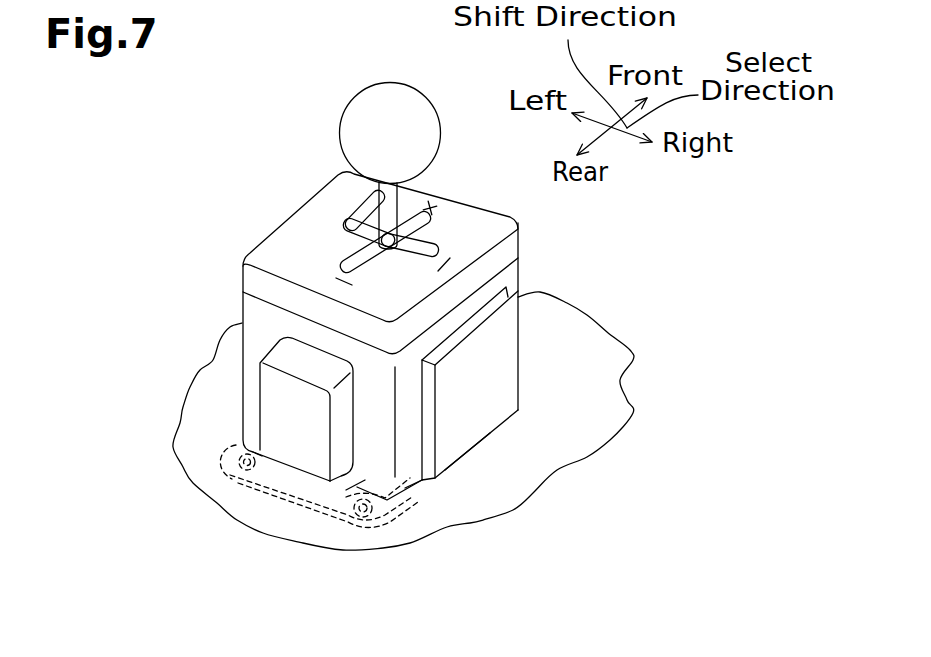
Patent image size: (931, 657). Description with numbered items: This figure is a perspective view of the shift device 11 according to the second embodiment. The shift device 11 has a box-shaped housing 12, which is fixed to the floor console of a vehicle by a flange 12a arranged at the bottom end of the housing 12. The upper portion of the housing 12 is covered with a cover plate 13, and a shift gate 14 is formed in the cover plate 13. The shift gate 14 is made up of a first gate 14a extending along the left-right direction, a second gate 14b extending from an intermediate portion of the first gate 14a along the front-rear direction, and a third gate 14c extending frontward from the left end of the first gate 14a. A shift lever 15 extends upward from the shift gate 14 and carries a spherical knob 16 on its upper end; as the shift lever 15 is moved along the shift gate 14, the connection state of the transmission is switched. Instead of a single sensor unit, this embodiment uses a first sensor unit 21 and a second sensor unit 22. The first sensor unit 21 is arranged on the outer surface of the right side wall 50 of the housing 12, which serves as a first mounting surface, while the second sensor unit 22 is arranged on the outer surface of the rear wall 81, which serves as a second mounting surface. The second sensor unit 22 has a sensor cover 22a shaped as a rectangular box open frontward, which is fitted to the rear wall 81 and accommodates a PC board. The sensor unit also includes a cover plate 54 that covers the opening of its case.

The shift device 11 is at (207, 150).
The housing 12 is at (242, 386).
The flange 12a is at (225, 473).
The cover plate 13 is at (258, 253).
The shift gate 14 is at (432, 228).
The first gate 14a is at (352, 235).
The second gate 14b is at (378, 260).
The third gate 14c is at (340, 213).
The shift lever 15 is at (396, 197).
The spherical knob 16 is at (355, 108).
The first sensor unit 21 is at (496, 420).
The second sensor unit 22 is at (280, 430).
The sensor cover 22a is at (283, 458).
The right side wall 50 is at (415, 478).
The cover plate 54 is at (463, 445).
The rear wall 81 is at (358, 480).